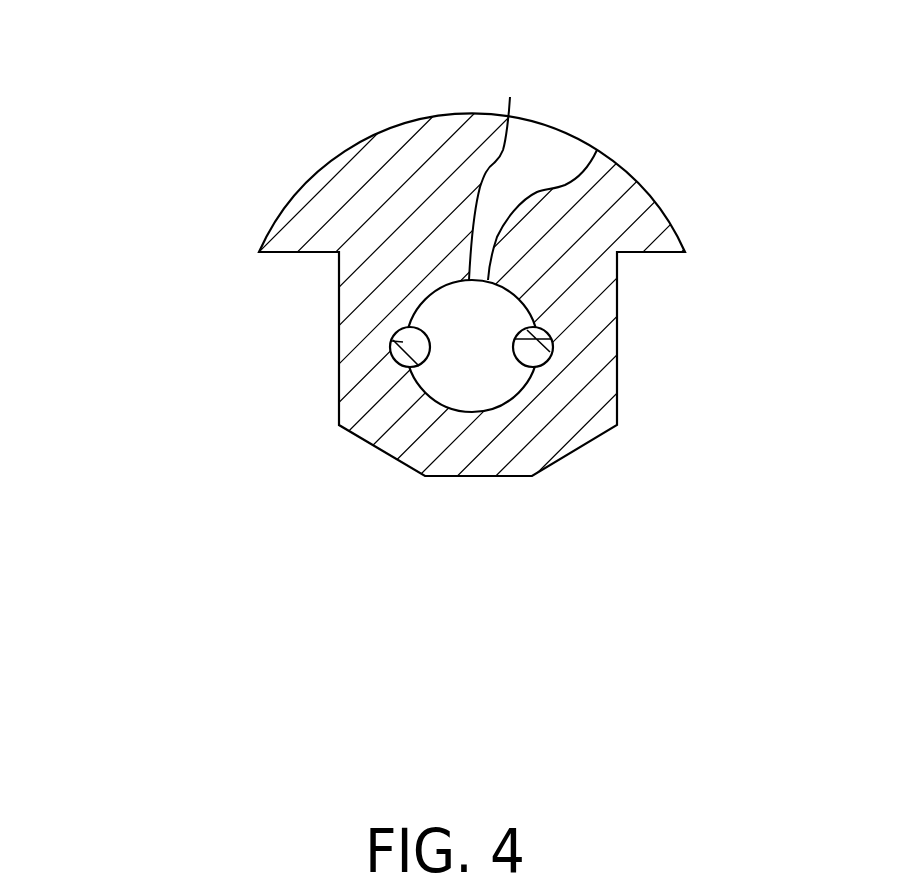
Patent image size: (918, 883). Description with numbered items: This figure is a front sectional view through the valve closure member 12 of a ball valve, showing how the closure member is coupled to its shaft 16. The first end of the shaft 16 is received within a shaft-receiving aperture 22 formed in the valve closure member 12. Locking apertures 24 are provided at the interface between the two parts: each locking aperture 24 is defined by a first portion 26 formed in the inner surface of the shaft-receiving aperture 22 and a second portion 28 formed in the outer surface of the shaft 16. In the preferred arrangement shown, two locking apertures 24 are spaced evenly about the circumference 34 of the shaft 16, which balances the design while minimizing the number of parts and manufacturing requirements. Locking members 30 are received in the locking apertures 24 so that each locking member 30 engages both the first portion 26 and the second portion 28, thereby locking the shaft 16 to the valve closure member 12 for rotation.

The valve closure member 12 is at (437, 150).
The shaft 16 is at (487, 307).
The shaft-receiving aperture 22 is at (597, 150).
The locking apertures 24 is at (540, 369).
The first portion 26 is at (392, 335).
The second portion 28 is at (430, 345).
The locking members 30 is at (392, 341).
The circumference 34 is at (510, 97).